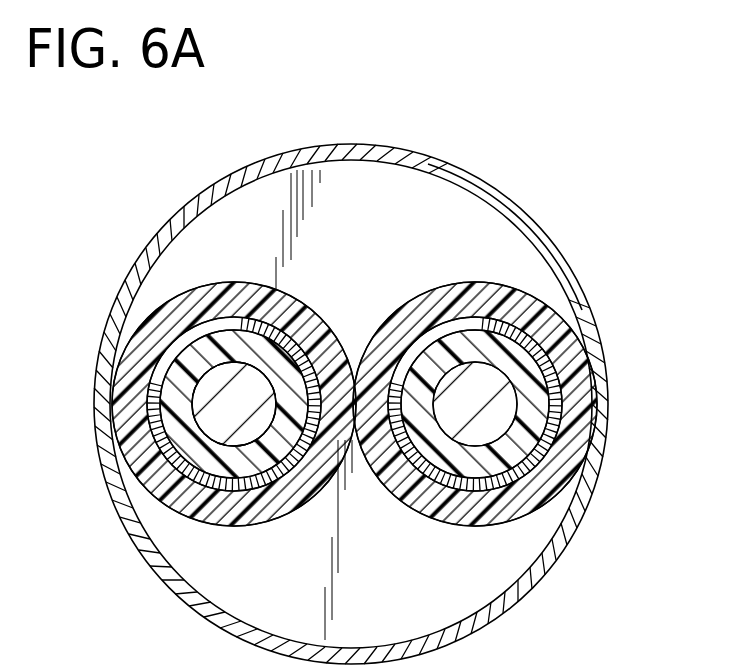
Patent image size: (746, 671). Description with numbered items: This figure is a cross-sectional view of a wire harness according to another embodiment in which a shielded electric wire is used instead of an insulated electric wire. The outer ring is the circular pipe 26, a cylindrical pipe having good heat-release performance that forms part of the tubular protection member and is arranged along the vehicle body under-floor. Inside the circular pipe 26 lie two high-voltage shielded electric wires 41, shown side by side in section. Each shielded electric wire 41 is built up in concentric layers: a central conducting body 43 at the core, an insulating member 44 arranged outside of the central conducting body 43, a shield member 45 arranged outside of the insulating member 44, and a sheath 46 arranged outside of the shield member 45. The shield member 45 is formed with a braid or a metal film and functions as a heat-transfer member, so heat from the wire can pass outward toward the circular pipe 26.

The circular pipe 26 is at (366, 152).
The shielded electric wire 41 is at (219, 284).
The central conducting body 43 is at (470, 417).
The insulating member 44 is at (527, 410).
The shield member 45 is at (543, 373).
The sheath 46 is at (548, 328).